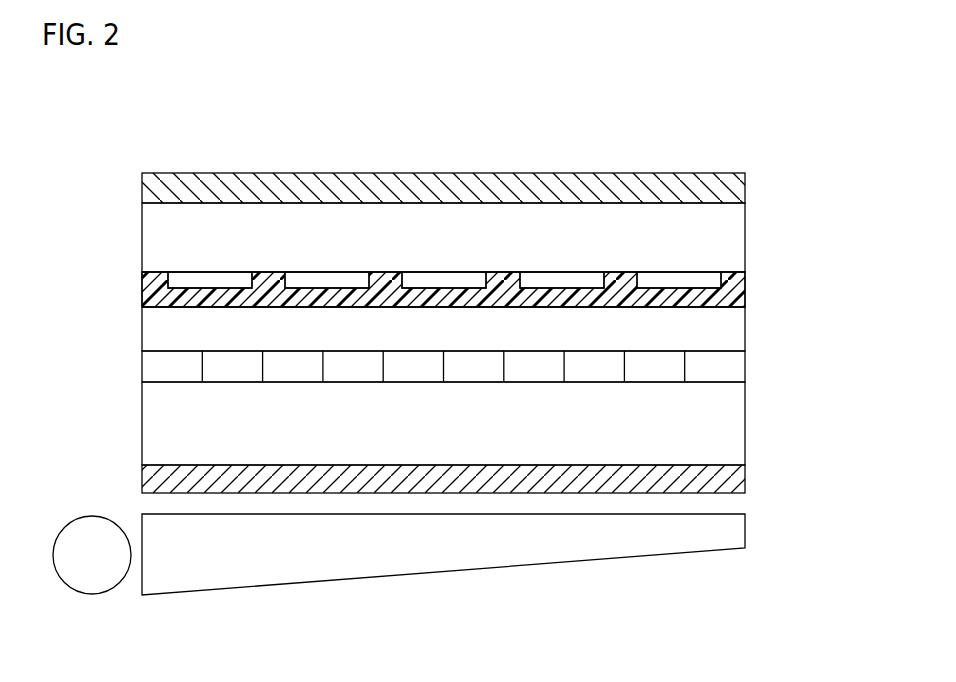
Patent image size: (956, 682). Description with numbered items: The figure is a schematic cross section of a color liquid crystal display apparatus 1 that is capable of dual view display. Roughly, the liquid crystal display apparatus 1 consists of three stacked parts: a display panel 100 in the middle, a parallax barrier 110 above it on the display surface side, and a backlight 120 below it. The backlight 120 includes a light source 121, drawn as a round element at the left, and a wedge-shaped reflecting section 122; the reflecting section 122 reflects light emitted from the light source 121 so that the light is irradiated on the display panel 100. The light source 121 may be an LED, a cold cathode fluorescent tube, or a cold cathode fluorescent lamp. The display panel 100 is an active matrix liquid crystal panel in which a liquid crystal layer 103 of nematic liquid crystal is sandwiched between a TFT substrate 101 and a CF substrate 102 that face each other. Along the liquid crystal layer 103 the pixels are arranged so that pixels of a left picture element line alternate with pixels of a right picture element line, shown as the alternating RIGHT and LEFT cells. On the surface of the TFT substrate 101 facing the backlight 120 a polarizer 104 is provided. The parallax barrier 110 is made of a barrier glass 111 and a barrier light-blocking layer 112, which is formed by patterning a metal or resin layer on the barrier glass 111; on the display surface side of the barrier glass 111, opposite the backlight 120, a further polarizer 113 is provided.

The liquid crystal display apparatus 1 is at (737, 125).
The display panel 100 is at (813, 307).
The TFT substrate 101 is at (742, 417).
The CF substrate 102 is at (742, 323).
The liquid crystal layer 103 is at (742, 365).
The polarizer 104 is at (742, 478).
The parallax barrier 110 is at (813, 200).
The barrier glass 111 is at (740, 238).
The barrier light-blocking layer 112 is at (685, 278).
The polarizer 113 is at (742, 187).
The backlight 120 is at (813, 512).
The light source 121 is at (92, 525).
The reflecting section 122 is at (742, 532).